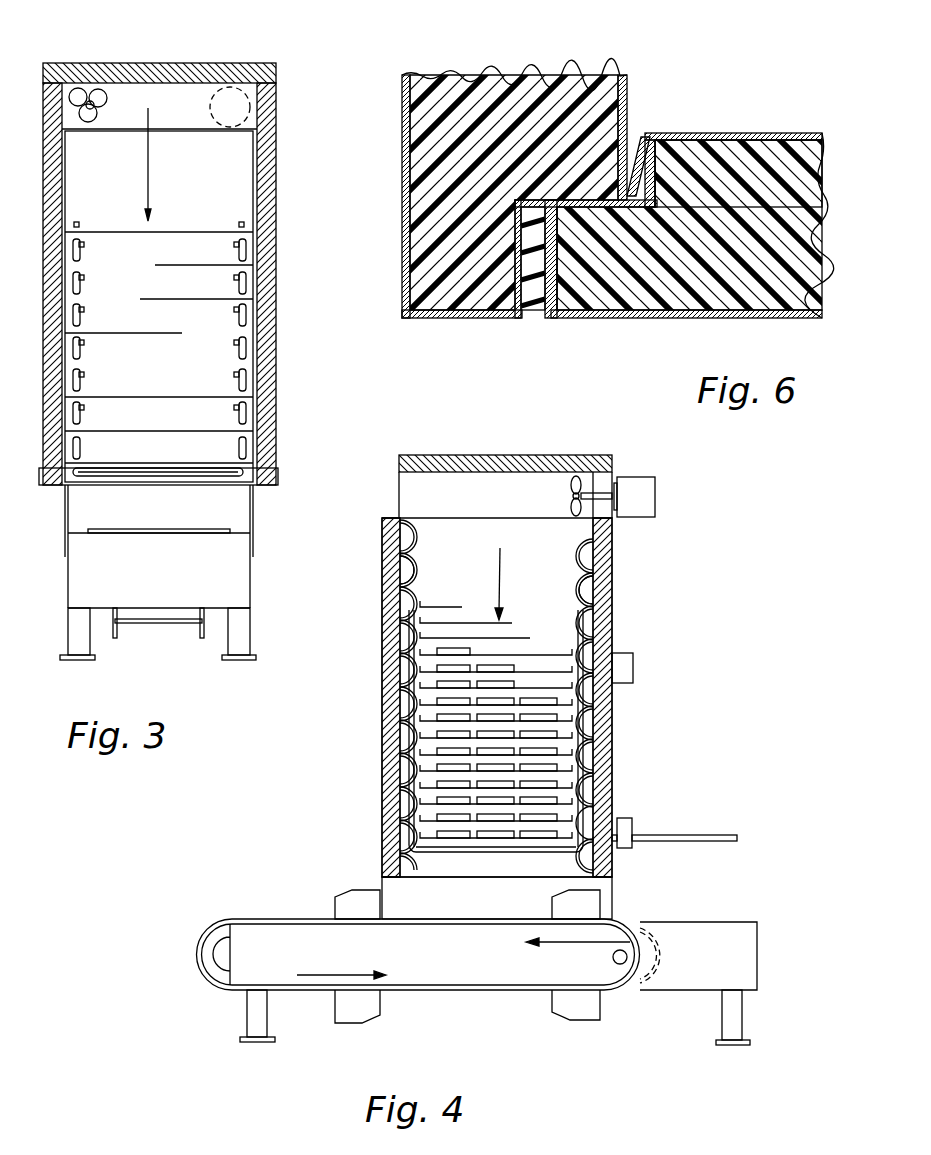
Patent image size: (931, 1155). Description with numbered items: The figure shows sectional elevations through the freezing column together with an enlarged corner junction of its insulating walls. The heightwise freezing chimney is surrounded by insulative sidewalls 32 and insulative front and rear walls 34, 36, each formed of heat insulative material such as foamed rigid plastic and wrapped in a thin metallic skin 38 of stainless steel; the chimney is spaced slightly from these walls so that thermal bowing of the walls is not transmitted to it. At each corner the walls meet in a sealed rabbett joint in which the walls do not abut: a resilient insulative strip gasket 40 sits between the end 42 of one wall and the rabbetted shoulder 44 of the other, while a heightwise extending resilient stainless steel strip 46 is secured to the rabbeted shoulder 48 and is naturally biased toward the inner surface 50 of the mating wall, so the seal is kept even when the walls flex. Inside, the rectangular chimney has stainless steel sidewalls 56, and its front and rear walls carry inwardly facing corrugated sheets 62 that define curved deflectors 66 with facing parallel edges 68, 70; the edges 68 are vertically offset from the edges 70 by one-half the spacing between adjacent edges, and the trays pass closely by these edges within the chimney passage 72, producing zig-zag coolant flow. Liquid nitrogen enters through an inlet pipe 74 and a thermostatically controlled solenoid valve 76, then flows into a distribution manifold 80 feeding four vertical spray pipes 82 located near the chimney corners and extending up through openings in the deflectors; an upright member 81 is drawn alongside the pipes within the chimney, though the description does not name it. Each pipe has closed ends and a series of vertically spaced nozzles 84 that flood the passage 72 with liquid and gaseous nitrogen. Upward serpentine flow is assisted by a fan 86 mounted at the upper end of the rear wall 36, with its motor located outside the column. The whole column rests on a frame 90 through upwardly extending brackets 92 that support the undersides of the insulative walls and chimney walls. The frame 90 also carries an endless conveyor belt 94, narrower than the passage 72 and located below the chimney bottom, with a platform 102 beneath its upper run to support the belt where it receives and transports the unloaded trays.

In FIG. 3, the insulative sidewall 32 is at (62, 180).
In FIG. 6, the insulative sidewall 32 is at (705, 295).
In FIG. 6, the insulative front wall 34 is at (517, 95).
In FIG. 4, the insulative front wall 34 is at (392, 622).
In FIG. 4, the insulative rear wall 36 is at (606, 612).
In FIG. 6, the metallic skin 38 is at (402, 117).
In FIG. 6, the resilient insulative strip gasket 40 is at (535, 318).
In FIG. 6, the end of the wall 42 is at (606, 318).
In FIG. 6, the rabbetted shoulder 44 is at (475, 311).
In FIG. 6, the resilient stainless steel strip 46 is at (646, 150).
In FIG. 6, the rabbeted shoulder 48 is at (658, 176).
In FIG. 6, the inner surface 50 is at (632, 180).
In FIG. 3, the chimney sidewall 56 is at (253, 186).
In FIG. 4, the corrugated sheet 62 is at (388, 682).
In FIG. 4, the curved deflector 66 is at (405, 543).
In FIG. 4, the deflector edge 68 is at (417, 590).
In FIG. 4, the deflector edge 70 is at (581, 613).
In FIG. 3, the chimney passage 72 is at (161, 157).
In FIG. 4, the chimney passage 72 is at (504, 571).
In FIG. 4, the inlet pipe 74 is at (722, 842).
In FIG. 4, the thermostatically controlled solenoid valve 76 is at (630, 822).
In FIG. 4, the distribution manifold 80 is at (500, 855).
In FIG. 4, the rack post 81 is at (412, 773).
In FIG. 3, the vertical spray pipe 82 is at (246, 289).
In FIG. 4, the vertical spray pipe 82 is at (583, 694).
In FIG. 3, the nozzle 84 is at (84, 316).
In FIG. 3, the fan 86 is at (107, 97).
In FIG. 4, the fan 86 is at (613, 496).
In FIG. 3, the frame 90 is at (240, 632).
In FIG. 3, the bracket 92 is at (255, 516).
In FIG. 3, the endless conveyor belt 94 is at (228, 578).
In FIG. 4, the platform 102 is at (435, 925).